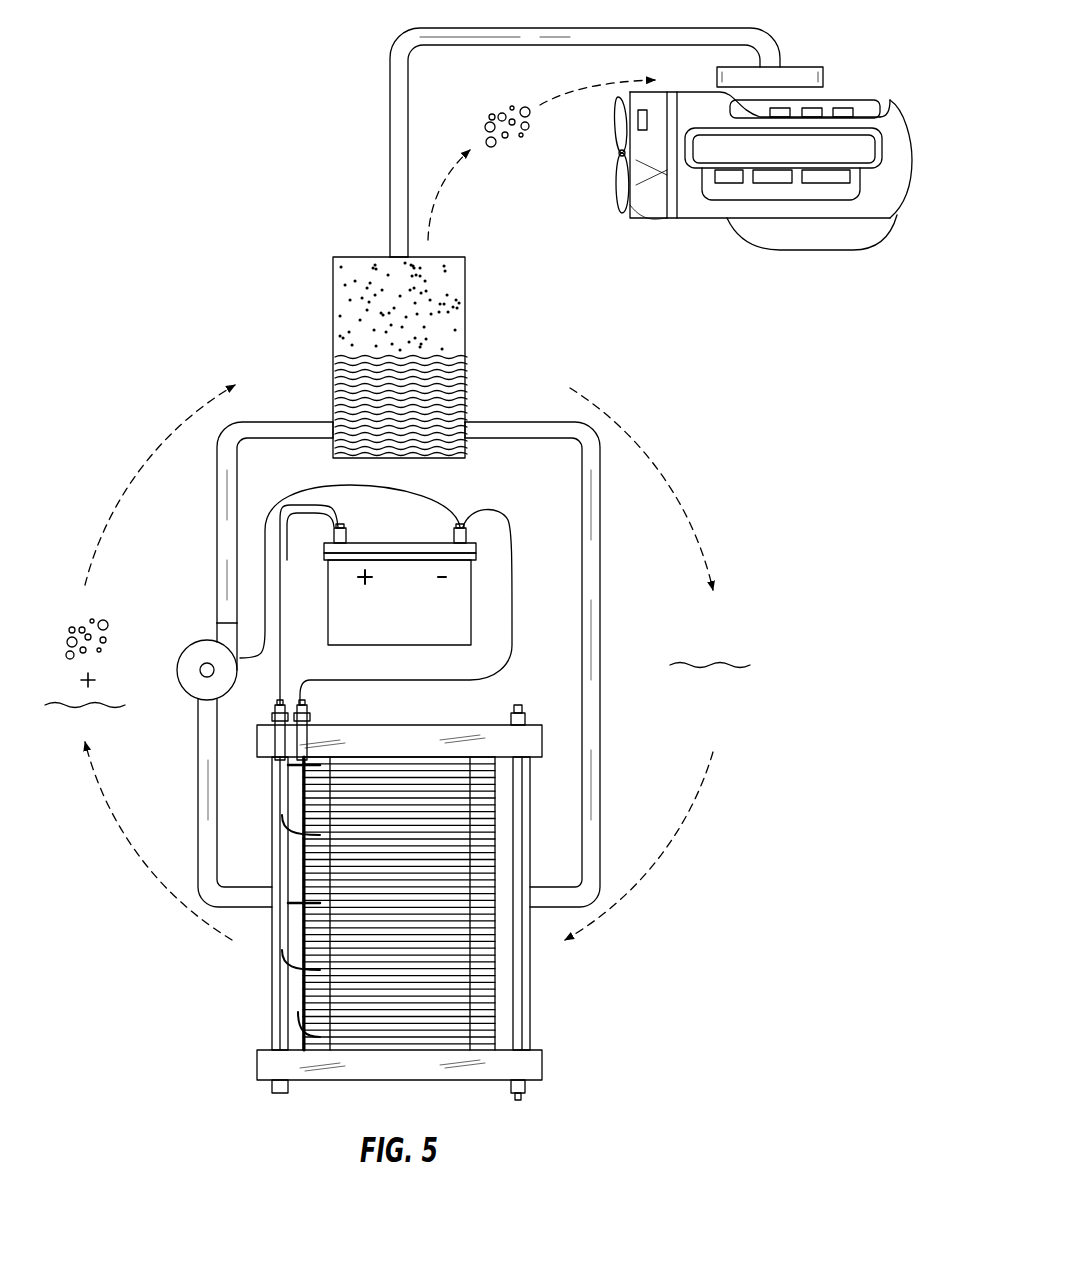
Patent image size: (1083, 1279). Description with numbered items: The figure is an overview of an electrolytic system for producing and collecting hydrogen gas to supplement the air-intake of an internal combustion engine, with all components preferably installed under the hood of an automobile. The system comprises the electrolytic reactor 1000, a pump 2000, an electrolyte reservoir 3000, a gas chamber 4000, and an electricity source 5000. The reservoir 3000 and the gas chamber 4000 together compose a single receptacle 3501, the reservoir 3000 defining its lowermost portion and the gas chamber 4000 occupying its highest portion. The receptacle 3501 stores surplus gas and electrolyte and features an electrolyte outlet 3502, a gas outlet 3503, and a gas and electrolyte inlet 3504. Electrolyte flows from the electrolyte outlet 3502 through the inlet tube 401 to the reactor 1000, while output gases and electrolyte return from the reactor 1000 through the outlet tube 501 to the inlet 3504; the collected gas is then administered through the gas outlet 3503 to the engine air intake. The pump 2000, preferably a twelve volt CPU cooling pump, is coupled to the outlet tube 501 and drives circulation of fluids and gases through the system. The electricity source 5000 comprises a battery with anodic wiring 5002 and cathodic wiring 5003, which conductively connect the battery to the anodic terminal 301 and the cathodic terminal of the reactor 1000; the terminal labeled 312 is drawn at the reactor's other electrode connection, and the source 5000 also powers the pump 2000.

The electrolytic reactor 1000 is at (339, 911).
The pump 2000 is at (210, 637).
The electrolyte reservoir 3000 is at (450, 392).
The receptacle 3501 is at (333, 323).
The electrolyte outlet 3502 is at (465, 443).
The gas outlet 3503 is at (390, 257).
The gas and electrolyte inlet 3504 is at (333, 422).
The gas chamber 4000 is at (450, 307).
The electricity source 5000 is at (430, 625).
The anodic wiring 5002 is at (472, 678).
The cathodic wiring 5003 is at (282, 643).
The anodic terminal 301 is at (308, 714).
The electrode terminal 312 is at (273, 716).
The inlet tube 401 is at (590, 762).
The outlet tube 501 is at (205, 818).